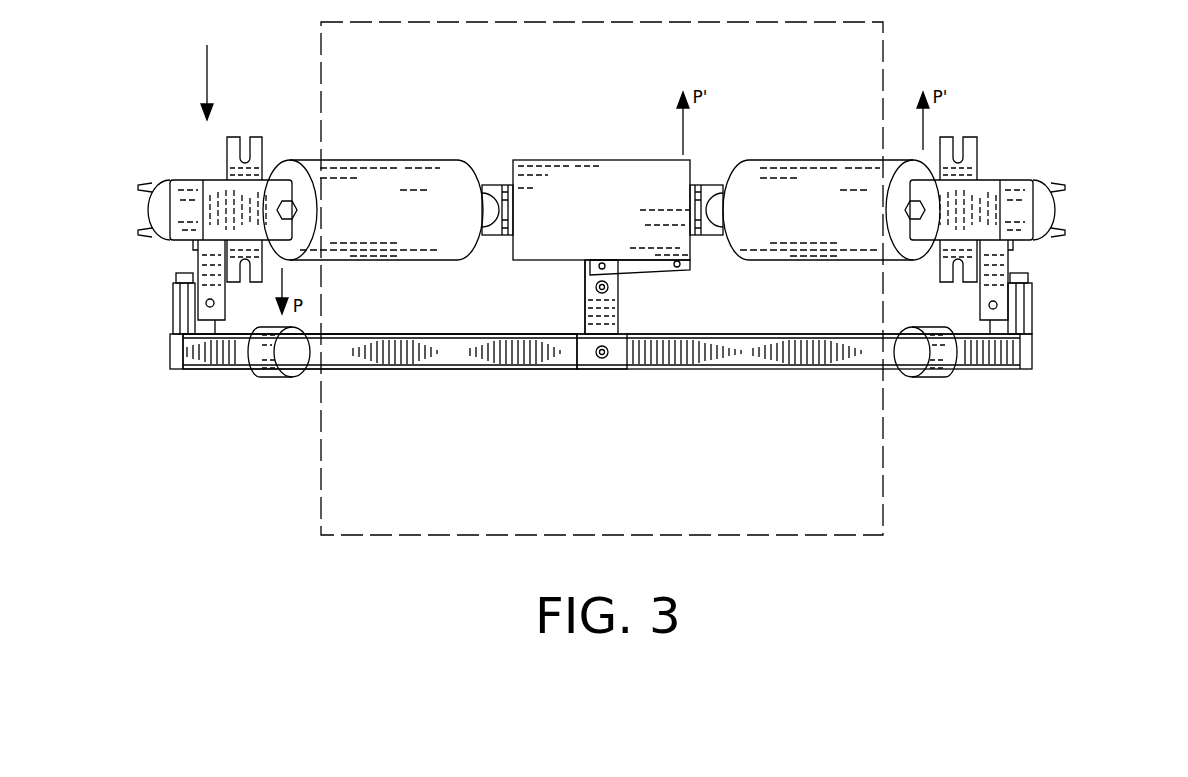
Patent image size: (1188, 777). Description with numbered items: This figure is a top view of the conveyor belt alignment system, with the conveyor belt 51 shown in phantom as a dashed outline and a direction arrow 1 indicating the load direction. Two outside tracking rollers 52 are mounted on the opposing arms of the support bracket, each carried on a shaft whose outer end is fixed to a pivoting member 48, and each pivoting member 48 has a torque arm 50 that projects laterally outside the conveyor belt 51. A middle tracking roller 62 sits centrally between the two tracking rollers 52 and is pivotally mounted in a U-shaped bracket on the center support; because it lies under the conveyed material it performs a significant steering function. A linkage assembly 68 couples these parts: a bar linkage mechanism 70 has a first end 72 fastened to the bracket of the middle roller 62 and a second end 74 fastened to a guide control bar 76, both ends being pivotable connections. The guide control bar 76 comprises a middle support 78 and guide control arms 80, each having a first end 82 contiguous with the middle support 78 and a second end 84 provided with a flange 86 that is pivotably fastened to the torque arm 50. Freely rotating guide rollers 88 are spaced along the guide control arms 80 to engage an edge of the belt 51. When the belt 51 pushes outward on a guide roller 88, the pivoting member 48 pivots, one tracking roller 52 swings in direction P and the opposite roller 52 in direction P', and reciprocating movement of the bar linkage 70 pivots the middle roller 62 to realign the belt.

The direction arrow / load direction 1 is at (213, 82).
The pivoting member 48 is at (178, 168).
The torque arm 50 is at (196, 248).
The conveyor belt 51 is at (827, 465).
The outside tracking roller 52 is at (395, 158).
The middle tracking roller 62 is at (592, 158).
The linkage assembly 68 is at (842, 387).
The bar linkage mechanism 70 is at (618, 300).
The first end 72 is at (690, 262).
The second end 74 is at (583, 332).
The guide control bar 76 is at (550, 370).
The middle support 78 is at (610, 370).
The guide control arm 80 is at (355, 370).
The first end 82 is at (627, 370).
The second end 84 is at (1033, 363).
The flange 86 is at (1032, 303).
The guide roller 88 is at (270, 378).